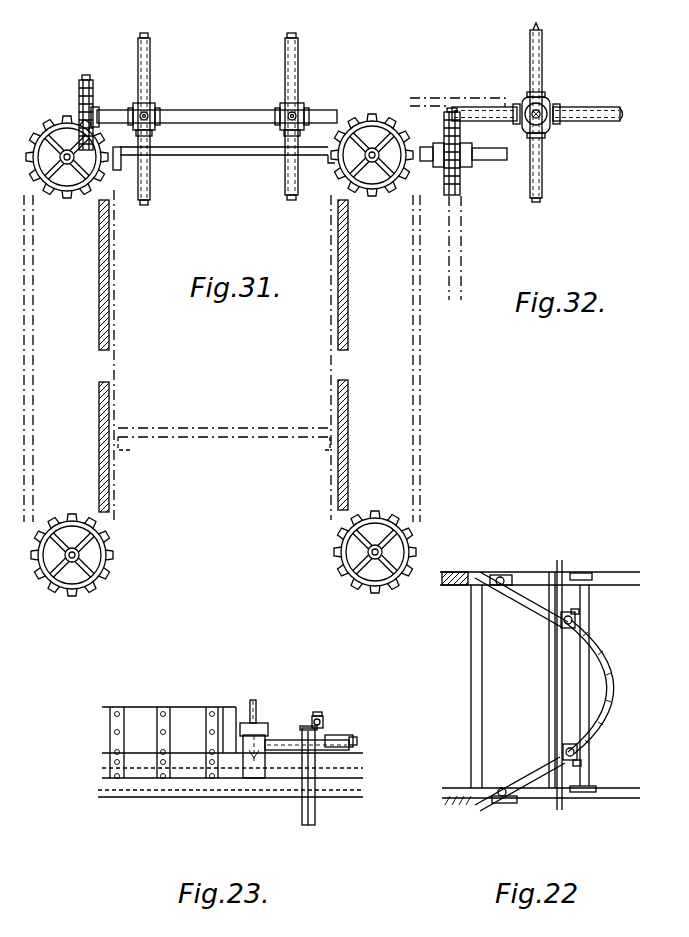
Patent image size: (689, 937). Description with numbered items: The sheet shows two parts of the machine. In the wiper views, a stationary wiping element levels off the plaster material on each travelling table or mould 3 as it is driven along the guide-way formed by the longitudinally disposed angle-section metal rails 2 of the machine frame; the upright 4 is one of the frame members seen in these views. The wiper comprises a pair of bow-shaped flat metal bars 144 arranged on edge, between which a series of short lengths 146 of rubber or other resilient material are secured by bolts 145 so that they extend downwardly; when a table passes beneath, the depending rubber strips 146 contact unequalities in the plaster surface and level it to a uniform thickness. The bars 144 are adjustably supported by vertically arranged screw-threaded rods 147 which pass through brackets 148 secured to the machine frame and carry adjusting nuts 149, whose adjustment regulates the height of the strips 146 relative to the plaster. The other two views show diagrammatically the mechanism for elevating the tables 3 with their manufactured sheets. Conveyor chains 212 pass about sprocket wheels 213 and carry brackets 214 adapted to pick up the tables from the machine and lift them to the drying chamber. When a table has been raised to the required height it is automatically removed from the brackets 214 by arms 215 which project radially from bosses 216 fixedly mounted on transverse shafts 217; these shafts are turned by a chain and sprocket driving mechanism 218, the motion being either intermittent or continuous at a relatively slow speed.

In FIG. 22, the angle-section metal rails 2 is at (612, 796).
In FIG. 31, the travelling tables or moulds 3 is at (247, 157).
In FIG. 32, the travelling tables or moulds 3 is at (453, 97).
In FIG. 22, the upright post 4 is at (576, 688).
In FIG. 23, the bow-shaped flat metal bars 144 is at (275, 752).
In FIG. 22, the bolts 145 is at (591, 645).
In FIG. 23, the short lengths of rubber 146 is at (326, 750).
In FIG. 22, the short lengths of rubber 146 is at (610, 672).
In FIG. 23, the screw-threaded rods 147 is at (253, 705).
In FIG. 22, the screw-threaded rods 147 is at (563, 620).
In FIG. 23, the brackets 148 is at (264, 723).
In FIG. 22, the brackets 148 is at (567, 745).
In FIG. 23, the adjusting nuts 149 is at (324, 722).
In FIG. 22, the adjusting nuts 149 is at (574, 622).
In FIG. 31, the conveyor chains 212 is at (112, 236).
In FIG. 32, the conveyor chains 212 is at (462, 250).
In FIG. 31, the sprocket wheels 213 is at (67, 198).
In FIG. 32, the sprocket wheels 213 is at (443, 182).
In FIG. 31, the brackets 214 is at (121, 170).
In FIG. 32, the brackets 214 is at (468, 165).
In FIG. 31, the arms 215 is at (152, 52).
In FIG. 32, the arms 215 is at (545, 163).
In FIG. 31, the bosses 216 is at (282, 107).
In FIG. 32, the bosses 216 is at (544, 105).
In FIG. 31, the transverse shafts 217 is at (182, 112).
In FIG. 32, the transverse shafts 217 is at (546, 113).
In FIG. 31, the chain and sprocket driving mechanism 218 is at (85, 78).